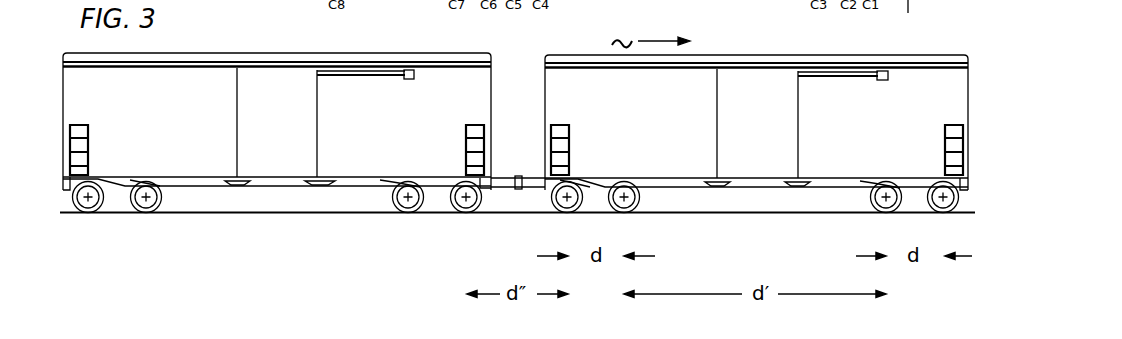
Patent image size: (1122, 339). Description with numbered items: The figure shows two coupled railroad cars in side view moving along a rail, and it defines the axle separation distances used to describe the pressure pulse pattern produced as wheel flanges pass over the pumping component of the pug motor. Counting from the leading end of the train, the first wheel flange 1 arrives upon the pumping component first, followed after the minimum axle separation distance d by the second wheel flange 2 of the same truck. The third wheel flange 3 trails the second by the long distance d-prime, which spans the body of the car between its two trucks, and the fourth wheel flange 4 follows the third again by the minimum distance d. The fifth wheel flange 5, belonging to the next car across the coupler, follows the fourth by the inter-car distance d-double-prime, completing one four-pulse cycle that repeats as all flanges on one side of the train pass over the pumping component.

The first wheel flange 1 is at (945, 275).
The second wheel flange 2 is at (886, 303).
The third wheel flange 3 is at (624, 303).
The fourth wheel flange 4 is at (568, 303).
The fifth wheel flange 5 is at (467, 303).